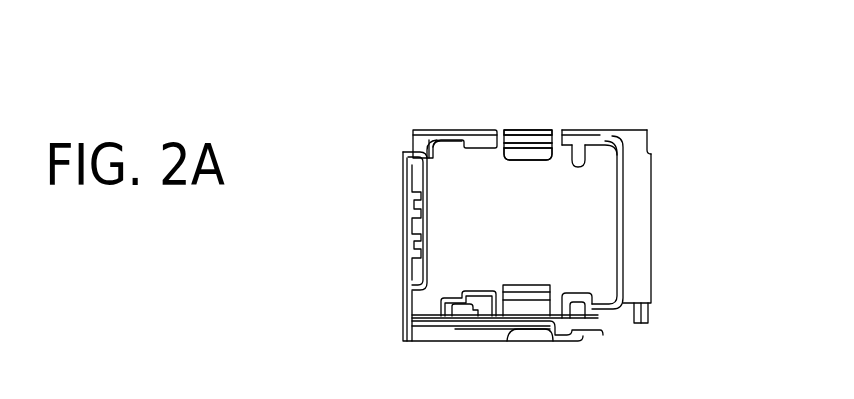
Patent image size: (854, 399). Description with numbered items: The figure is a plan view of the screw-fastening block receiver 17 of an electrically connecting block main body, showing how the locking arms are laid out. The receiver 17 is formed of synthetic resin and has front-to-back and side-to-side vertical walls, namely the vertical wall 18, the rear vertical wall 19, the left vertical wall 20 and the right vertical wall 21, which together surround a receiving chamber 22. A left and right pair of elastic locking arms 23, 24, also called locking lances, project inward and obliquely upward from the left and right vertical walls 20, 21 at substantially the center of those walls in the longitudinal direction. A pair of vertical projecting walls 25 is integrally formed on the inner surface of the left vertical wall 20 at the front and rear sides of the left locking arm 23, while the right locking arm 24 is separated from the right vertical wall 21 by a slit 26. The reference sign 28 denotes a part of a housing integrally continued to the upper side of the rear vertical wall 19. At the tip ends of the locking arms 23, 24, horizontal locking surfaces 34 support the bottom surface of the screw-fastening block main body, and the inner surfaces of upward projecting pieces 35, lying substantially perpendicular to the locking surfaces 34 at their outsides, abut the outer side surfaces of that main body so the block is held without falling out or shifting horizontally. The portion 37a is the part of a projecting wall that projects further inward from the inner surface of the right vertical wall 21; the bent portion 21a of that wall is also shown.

The screw-fastening block receiver 17 is at (757, 155).
The vertical wall 18 is at (636, 257).
The rear vertical wall 19 is at (403, 306).
The left vertical wall 20 is at (456, 329).
The right vertical wall 21 is at (470, 130).
The bent portion of engaging portion 21a is at (428, 150).
The receiving chamber 22 is at (588, 192).
The left locking arm 23 is at (522, 285).
The right locking arm 24 is at (522, 163).
The vertical projecting wall 25 is at (477, 292).
The slit 26 is at (501, 130).
The part of housing 28 is at (403, 188).
The horizontal locking surface 34 is at (543, 160).
The upward projecting piece 35 is at (530, 130).
The further projected inward portion of projecting wall 37a is at (568, 130).